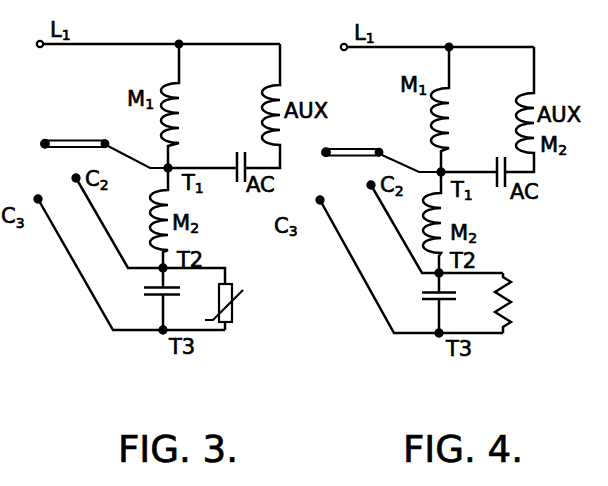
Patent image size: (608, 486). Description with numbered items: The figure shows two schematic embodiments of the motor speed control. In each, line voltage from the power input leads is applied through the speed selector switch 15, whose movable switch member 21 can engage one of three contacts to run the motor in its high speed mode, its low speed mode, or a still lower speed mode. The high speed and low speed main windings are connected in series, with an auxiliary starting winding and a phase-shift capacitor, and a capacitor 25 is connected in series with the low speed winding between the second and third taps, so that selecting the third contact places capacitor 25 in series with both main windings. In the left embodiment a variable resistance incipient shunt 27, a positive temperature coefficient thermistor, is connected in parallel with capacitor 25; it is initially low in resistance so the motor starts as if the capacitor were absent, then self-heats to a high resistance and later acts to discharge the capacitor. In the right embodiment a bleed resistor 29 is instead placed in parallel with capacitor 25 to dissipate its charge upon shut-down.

In FIG. 3, the speed selector switch 15 is at (49, 155).
In FIG. 4, the speed selector switch 15 is at (327, 166).
In FIG. 3, the movable switch member 21 is at (89, 138).
In FIG. 4, the movable switch member 21 is at (365, 147).
In FIG. 3, the capacitor 25 is at (136, 295).
In FIG. 4, the capacitor 25 is at (413, 299).
In FIG. 3, the variable resistance incipient shunt 27 is at (234, 323).
In FIG. 4, the bleed resistor 29 is at (513, 297).